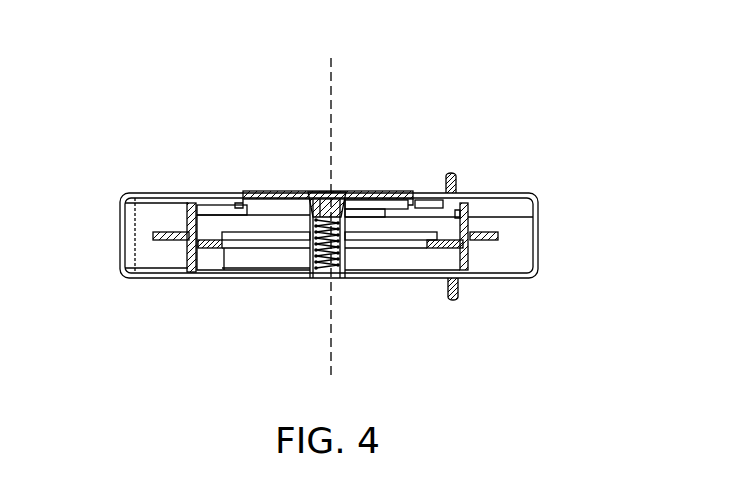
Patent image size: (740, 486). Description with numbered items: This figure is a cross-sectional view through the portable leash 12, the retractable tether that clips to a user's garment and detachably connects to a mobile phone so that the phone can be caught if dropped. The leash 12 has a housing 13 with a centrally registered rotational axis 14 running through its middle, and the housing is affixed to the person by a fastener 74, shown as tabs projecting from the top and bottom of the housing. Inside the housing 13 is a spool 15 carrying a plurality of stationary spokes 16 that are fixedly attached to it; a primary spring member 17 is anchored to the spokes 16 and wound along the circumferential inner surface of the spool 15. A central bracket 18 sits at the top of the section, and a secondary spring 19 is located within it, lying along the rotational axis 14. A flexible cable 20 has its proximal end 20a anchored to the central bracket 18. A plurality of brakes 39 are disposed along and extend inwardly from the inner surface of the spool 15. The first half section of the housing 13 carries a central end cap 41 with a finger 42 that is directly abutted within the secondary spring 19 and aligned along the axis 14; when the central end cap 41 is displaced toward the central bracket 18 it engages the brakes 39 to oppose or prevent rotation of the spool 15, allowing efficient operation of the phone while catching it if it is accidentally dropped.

The portable leash 12 is at (146, 163).
The housing 13 is at (538, 228).
The centrally registered rotational axis 14 is at (333, 83).
The spool 15 is at (193, 258).
The stationary spokes 16 is at (256, 236).
The primary spring member 17 is at (446, 245).
The central bracket 18 is at (300, 194).
The secondary spring 19 is at (334, 273).
The flexible cable 20 is at (492, 230).
The proximal end 20a is at (340, 190).
The brakes 39 is at (224, 213).
The central end cap 41 is at (318, 190).
The finger 42 is at (341, 217).
The fastener 74 is at (447, 176).